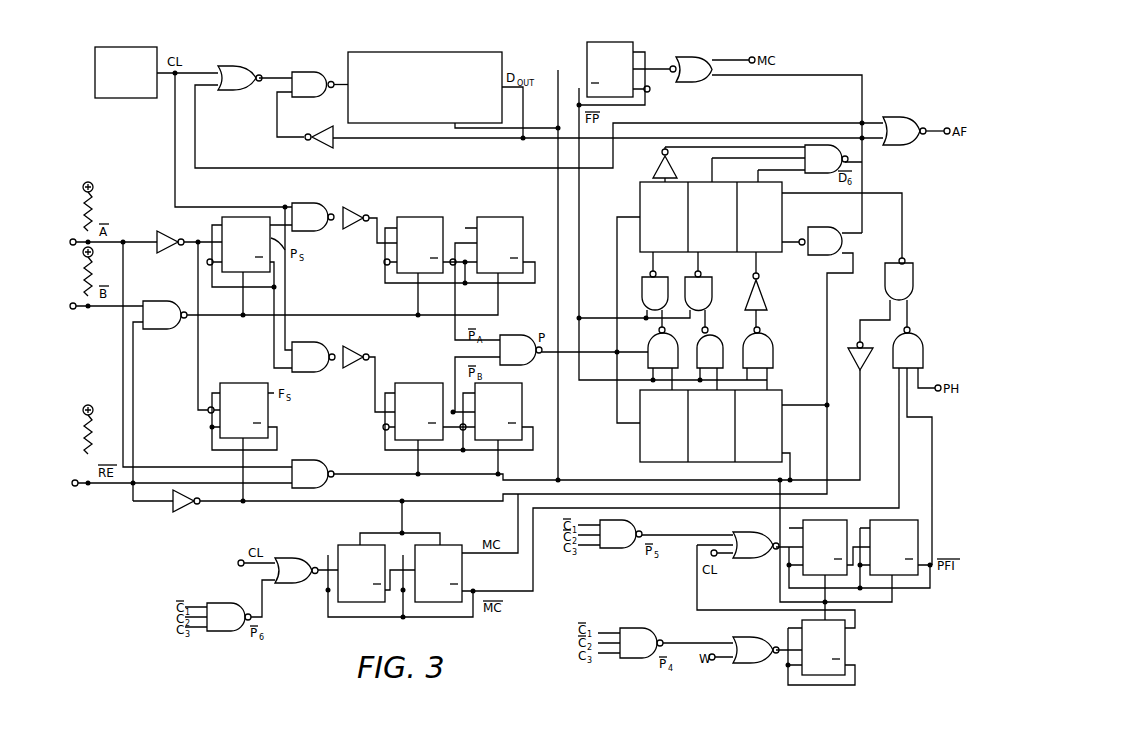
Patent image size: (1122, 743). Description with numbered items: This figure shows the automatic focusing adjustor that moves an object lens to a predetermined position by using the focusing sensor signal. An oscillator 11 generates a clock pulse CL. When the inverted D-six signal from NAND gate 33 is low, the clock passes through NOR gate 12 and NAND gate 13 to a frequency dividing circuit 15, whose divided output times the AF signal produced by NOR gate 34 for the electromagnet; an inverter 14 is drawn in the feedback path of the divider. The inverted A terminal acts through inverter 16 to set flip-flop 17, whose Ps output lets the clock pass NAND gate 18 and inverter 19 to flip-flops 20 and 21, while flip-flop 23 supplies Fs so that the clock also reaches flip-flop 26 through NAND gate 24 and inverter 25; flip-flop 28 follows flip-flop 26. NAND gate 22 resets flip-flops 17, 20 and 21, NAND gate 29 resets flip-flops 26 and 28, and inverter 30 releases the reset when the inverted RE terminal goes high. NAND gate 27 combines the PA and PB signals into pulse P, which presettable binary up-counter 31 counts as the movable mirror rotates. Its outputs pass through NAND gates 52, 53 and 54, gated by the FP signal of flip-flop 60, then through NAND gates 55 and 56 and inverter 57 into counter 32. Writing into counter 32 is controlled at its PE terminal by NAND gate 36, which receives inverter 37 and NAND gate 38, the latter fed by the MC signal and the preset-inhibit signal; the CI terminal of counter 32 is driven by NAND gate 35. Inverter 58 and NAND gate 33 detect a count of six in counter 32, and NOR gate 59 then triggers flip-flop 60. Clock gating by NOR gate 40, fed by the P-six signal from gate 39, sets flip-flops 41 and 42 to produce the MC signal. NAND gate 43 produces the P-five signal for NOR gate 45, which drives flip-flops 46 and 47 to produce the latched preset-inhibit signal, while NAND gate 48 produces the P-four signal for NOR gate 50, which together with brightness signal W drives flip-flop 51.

The oscillator 11 is at (141, 49).
The NOR gate 12 is at (238, 96).
The NAND gate 13 is at (318, 66).
The inverter 14 is at (308, 140).
The frequency dividing circuit 15 is at (480, 48).
The inverter 16 is at (164, 228).
The flip-flop 17 is at (250, 212).
The NAND gate 18 is at (314, 205).
The inverter 19 is at (356, 210).
The flip-flop 20 is at (430, 214).
The flip-flop 21 is at (509, 215).
The NAND gate 22 is at (168, 329).
The flip-flop 23 is at (249, 383).
The NAND gate 24 is at (322, 372).
The inverter 25 is at (356, 350).
The flip-flop 26 is at (425, 377).
The NAND gate 27 is at (516, 335).
The flip-flop 28 is at (518, 388).
The NAND gate 29 is at (313, 461).
The inverter 30 is at (183, 512).
The presettable binary up-counter 31 is at (639, 440).
The presettable binary up-counter 32 is at (639, 196).
The NAND gate 33 is at (825, 145).
The NOR gate 34 is at (912, 111).
The NAND gate 35 is at (820, 230).
The NAND gate 36 is at (911, 278).
The inverter 37 is at (872, 352).
The NAND gate 38 is at (920, 356).
The NAND gate 39 is at (222, 607).
The NOR gate 40 is at (296, 548).
The flip-flop 41 is at (346, 544).
The flip-flop 42 is at (444, 544).
The NAND gate 43 is at (613, 548).
The NOR gate 45 is at (755, 560).
The flip-flop 46 is at (830, 520).
The flip-flop 47 is at (922, 529).
The NAND gate 48 is at (635, 630).
The NOR gate 50 is at (755, 666).
The flip-flop 51 is at (847, 644).
The NAND gate 52 is at (656, 342).
The NAND gate 53 is at (710, 343).
The NAND gate 54 is at (774, 352).
The NAND gate 55 is at (646, 290).
The NAND gate 56 is at (702, 294).
The inverter 57 is at (765, 304).
The inverter 58 is at (656, 170).
The NOR gate 59 is at (697, 58).
The flip-flop 60 is at (628, 37).